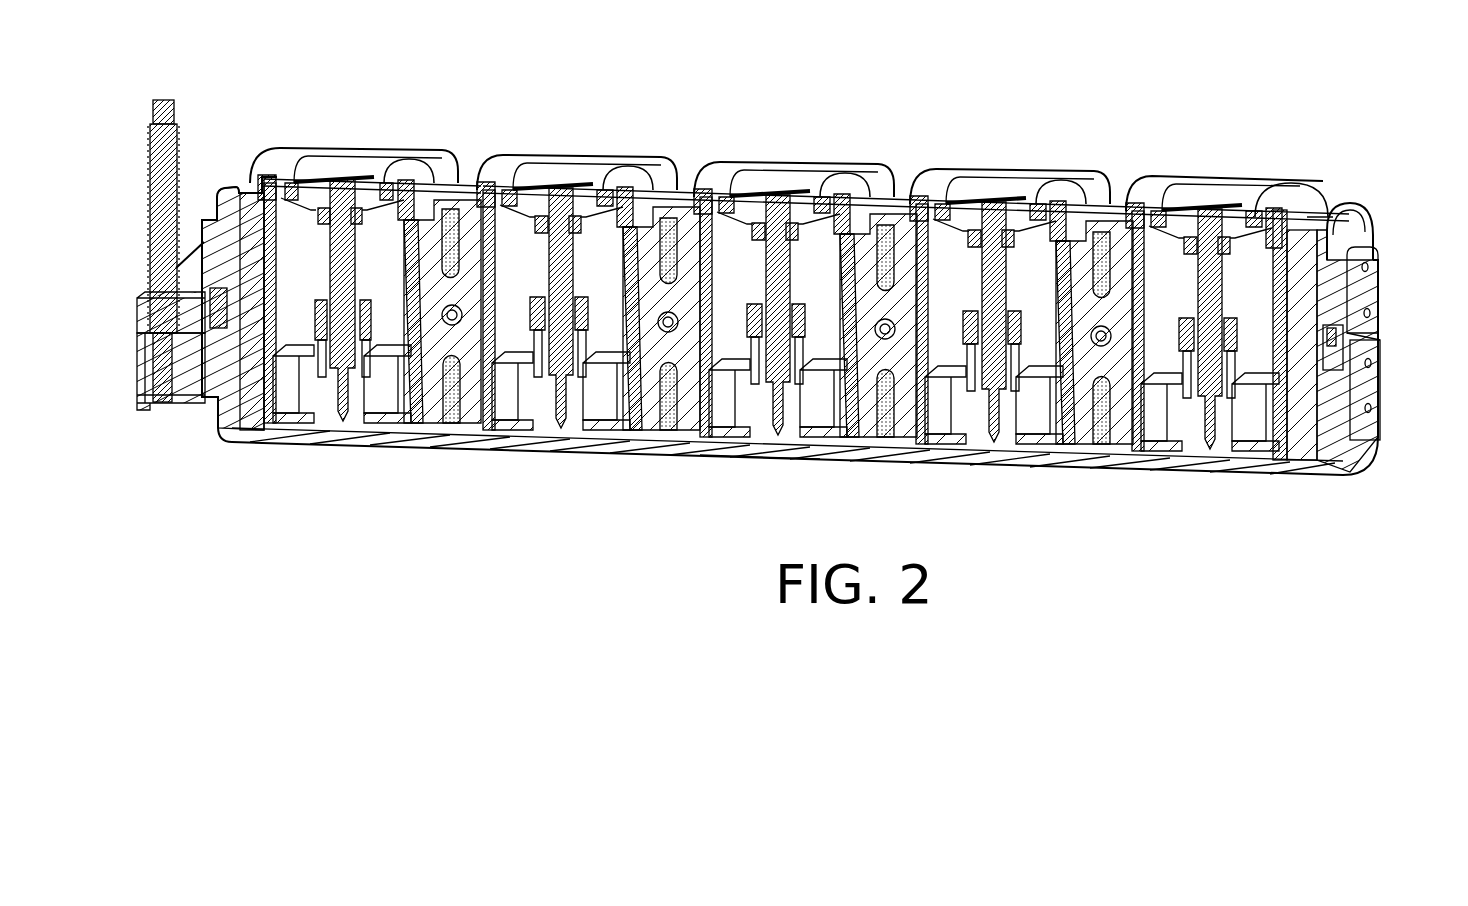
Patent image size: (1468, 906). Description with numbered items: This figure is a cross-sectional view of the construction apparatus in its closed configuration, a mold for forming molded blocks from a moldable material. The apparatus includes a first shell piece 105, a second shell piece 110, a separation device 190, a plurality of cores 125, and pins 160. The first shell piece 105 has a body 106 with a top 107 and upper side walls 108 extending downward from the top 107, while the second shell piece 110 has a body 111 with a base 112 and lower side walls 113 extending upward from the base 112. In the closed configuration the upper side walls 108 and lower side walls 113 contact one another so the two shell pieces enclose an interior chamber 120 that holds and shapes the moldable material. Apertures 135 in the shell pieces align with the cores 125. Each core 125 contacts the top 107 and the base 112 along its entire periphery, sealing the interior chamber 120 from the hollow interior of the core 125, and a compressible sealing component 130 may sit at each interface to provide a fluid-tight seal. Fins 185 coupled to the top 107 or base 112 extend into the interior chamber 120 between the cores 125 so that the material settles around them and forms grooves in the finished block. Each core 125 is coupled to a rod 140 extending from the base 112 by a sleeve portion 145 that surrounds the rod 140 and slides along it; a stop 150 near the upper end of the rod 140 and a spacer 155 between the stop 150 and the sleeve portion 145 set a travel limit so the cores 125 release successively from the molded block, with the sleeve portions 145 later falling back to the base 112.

The first shell piece 105 is at (232, 186).
The body 106 is at (790, 126).
The top 107 is at (633, 165).
The upper side walls 108 is at (1374, 286).
The second shell piece 110 is at (213, 433).
The body 111 is at (758, 481).
The base 112 is at (290, 438).
The lower side walls 113 is at (1372, 389).
The interior chamber 120 is at (1305, 309).
The cores 125 is at (387, 364).
The sealing component 130 is at (826, 197).
The apertures 135 is at (345, 158).
The rods 140 is at (993, 392).
The sleeve portion 145 is at (972, 352).
The stop 150 is at (1010, 237).
The spacer 155 is at (1020, 317).
The pins 160 is at (660, 322).
The fins 185 is at (668, 227).
The separation device 190 is at (162, 158).